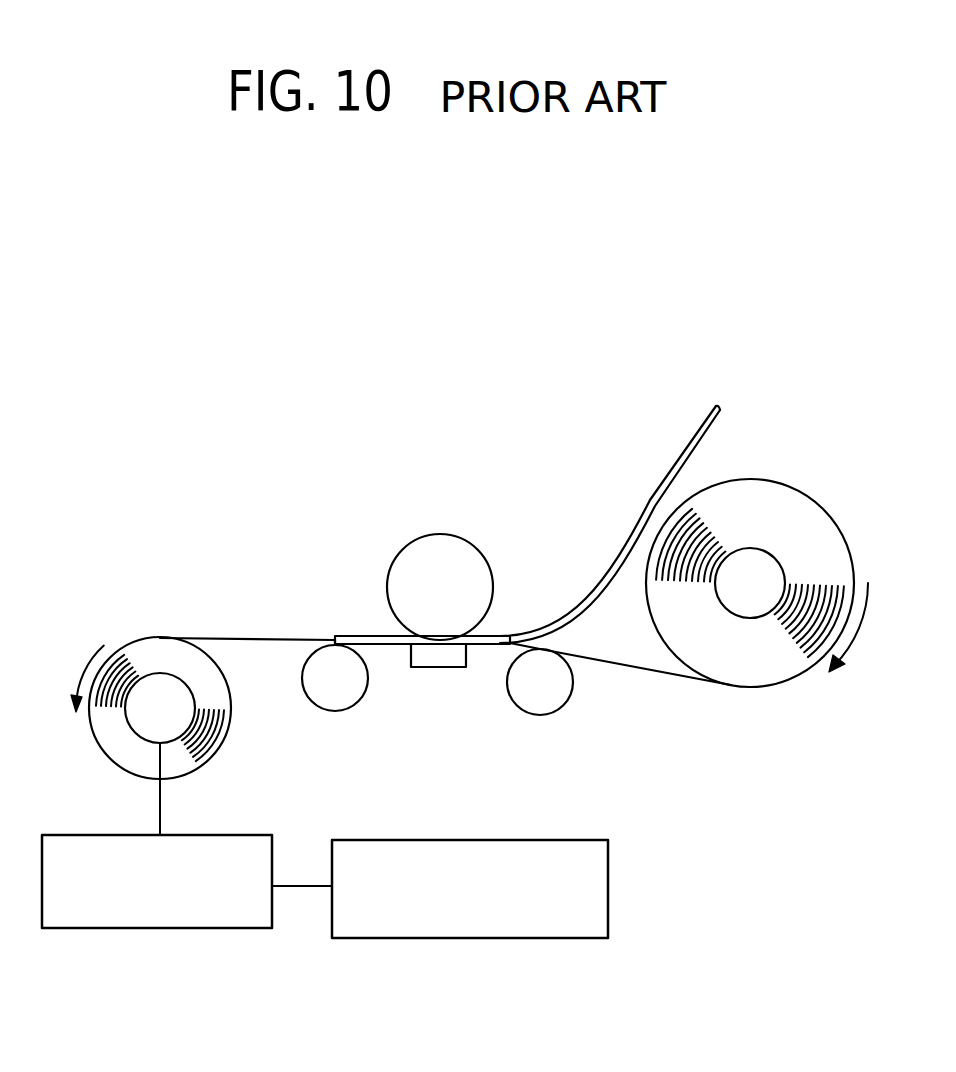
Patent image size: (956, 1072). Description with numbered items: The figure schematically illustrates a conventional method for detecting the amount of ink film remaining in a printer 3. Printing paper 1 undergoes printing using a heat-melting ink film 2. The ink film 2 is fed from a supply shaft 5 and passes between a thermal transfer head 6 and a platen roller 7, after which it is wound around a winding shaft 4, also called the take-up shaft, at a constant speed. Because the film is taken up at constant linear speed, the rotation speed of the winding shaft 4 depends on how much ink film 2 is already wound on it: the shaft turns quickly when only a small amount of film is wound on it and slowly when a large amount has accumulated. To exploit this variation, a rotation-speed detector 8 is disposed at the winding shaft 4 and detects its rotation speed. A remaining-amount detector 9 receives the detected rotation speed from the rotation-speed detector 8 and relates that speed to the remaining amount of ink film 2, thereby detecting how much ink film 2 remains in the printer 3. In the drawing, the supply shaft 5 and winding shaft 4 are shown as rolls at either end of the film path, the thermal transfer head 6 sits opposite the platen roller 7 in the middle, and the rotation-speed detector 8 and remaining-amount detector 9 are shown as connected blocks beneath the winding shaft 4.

The printing paper 1 is at (652, 482).
The heat-melting ink film 2 is at (243, 632).
The printer 3 is at (349, 519).
The winding shaft 4 is at (162, 693).
The supply shaft 5 is at (762, 572).
The thermal transfer head 6 is at (437, 667).
The platen roller 7 is at (444, 558).
The rotation-speed detector 8 is at (227, 835).
The remaining-amount detector 9 is at (523, 857).